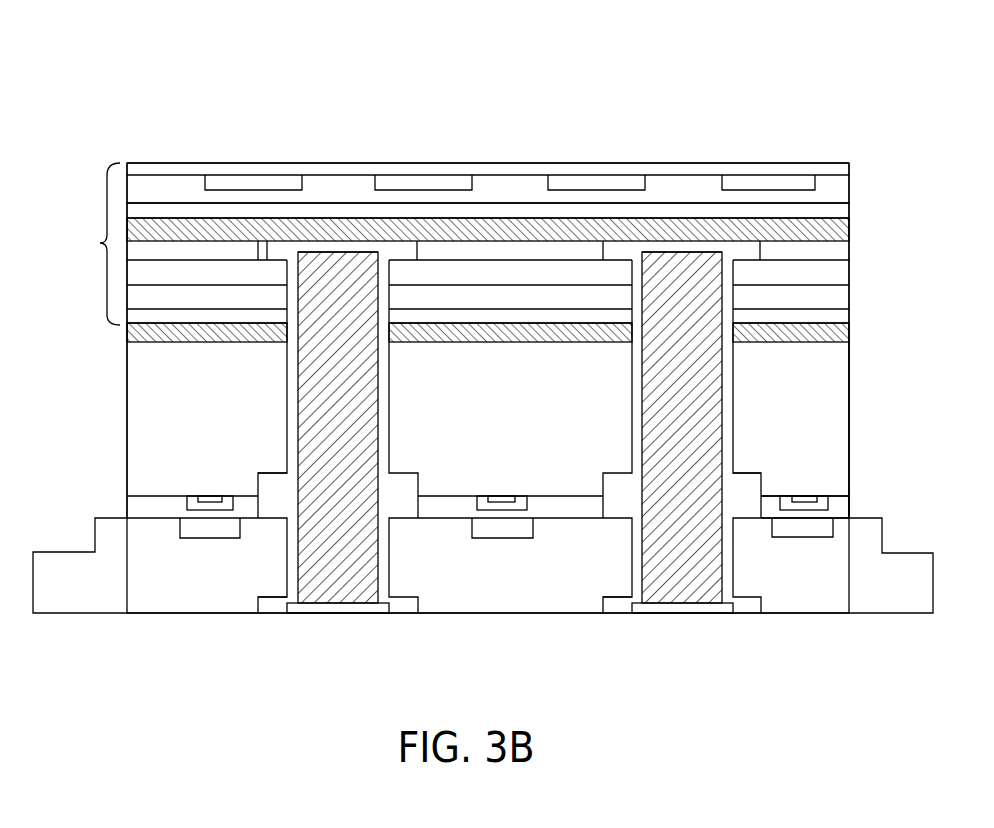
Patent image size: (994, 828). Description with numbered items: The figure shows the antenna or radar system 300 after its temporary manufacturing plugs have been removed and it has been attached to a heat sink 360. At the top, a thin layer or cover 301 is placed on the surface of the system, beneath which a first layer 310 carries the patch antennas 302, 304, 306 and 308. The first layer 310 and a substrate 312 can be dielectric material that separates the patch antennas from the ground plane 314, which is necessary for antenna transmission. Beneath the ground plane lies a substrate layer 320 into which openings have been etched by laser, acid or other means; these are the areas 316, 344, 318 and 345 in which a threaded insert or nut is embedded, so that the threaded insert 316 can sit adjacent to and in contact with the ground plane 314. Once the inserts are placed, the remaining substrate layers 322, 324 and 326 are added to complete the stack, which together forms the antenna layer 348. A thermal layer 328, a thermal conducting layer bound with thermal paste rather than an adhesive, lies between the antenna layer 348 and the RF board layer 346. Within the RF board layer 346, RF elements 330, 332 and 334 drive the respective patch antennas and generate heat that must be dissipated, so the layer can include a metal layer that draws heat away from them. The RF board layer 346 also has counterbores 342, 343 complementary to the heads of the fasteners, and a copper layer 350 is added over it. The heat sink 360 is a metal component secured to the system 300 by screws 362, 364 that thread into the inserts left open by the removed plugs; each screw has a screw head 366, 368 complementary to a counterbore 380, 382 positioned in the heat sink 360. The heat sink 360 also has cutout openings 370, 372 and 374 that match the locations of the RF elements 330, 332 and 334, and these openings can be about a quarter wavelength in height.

The antenna or radar system 300 is at (802, 44).
The thin layer or cover 301 is at (134, 170).
The patch antenna 302 is at (222, 180).
The patch antenna 304 is at (450, 180).
The patch antenna 306 is at (572, 180).
The patch antenna 308 is at (760, 180).
The first layer 310 is at (842, 185).
The substrate 312 is at (842, 207).
The ground plane 314 is at (842, 226).
The threaded insert 316 is at (263, 243).
The threaded insert 318 is at (607, 243).
The substrate layer 320 is at (842, 249).
The substrate layer 322 is at (842, 270).
The substrate layer 324 is at (842, 294).
The third membrane layer 326 is at (842, 318).
The thermal layer 328 is at (127, 330).
The RF element 330 is at (205, 497).
The RF element 332 is at (500, 497).
The RF element 334 is at (802, 494).
The counterbore 342 is at (267, 477).
The counterbore 343 is at (753, 477).
The area for threaded insert 344 is at (338, 250).
The area for threaded insert 345 is at (688, 250).
The RF board layer 346 is at (849, 440).
The antenna layer 348 is at (100, 243).
The copper layer 350 is at (842, 510).
The heat sink 360 is at (867, 600).
The screw 362 is at (368, 575).
The screw 364 is at (722, 573).
The screw head 366 is at (346, 608).
The screw head 368 is at (688, 618).
The cutout opening 370 is at (208, 528).
The cutout opening 372 is at (498, 528).
The cutout opening 374 is at (813, 528).
The counterbore 380 is at (268, 606).
The counterbore 382 is at (618, 606).